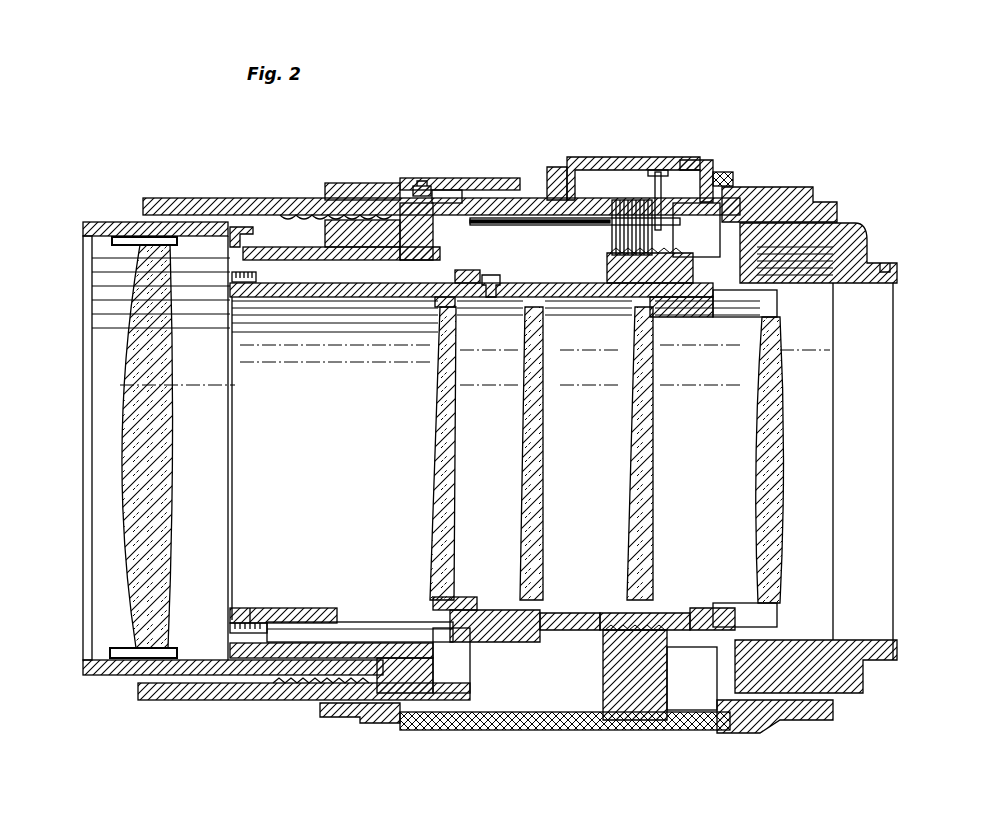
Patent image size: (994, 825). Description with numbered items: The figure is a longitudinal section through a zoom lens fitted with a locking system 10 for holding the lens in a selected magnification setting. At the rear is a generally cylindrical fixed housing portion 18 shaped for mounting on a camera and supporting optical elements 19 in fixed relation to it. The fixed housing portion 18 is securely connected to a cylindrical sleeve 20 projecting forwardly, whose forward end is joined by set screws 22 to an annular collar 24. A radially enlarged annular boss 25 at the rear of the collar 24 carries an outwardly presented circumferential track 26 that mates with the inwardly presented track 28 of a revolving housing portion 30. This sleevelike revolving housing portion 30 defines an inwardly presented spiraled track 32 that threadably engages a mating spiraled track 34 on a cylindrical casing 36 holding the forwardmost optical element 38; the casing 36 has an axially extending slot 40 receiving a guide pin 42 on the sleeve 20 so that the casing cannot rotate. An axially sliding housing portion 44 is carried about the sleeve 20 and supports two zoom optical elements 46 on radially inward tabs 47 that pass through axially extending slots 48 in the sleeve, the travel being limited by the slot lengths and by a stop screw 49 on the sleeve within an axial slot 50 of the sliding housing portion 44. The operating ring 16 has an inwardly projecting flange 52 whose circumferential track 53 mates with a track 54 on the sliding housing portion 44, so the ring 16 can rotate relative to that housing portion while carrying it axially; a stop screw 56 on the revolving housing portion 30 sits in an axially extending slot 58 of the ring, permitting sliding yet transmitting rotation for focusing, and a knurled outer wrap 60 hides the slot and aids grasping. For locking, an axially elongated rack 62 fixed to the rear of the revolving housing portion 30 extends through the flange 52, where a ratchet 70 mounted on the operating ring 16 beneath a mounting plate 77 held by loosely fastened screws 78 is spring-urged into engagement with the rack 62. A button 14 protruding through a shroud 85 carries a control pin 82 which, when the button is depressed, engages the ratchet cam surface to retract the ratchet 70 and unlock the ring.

The locking system 10 is at (532, 158).
The button 14 is at (705, 162).
The operating ring 16 is at (338, 185).
The fixed housing portion 18 is at (858, 232).
The optical elements 19 is at (652, 470).
The cylindrical sleeve 20 is at (342, 297).
The set screws 22 is at (232, 277).
The annular collar 24 is at (312, 260).
The annular boss 25 is at (430, 240).
The circumferential track 26 is at (405, 660).
The track 28 is at (410, 723).
The revolving housing portion 30 is at (185, 700).
The spiraled track 32 is at (300, 690).
The spiraled track 34 is at (325, 610).
The cylindrical casing 36 is at (130, 668).
The forwardmost optical element 38 is at (172, 508).
The slot 40 is at (238, 227).
The guide pin 42 is at (250, 227).
The axially sliding housing portion 44 is at (605, 297).
The zoom optical elements 46 is at (452, 488).
The tabs 47 is at (470, 307).
The slots 48 is at (345, 622).
The stop screw 49 is at (500, 276).
The axial slot 50 is at (480, 272).
The flange 52 is at (675, 265).
The circumferential track 53 is at (625, 665).
The track 54 is at (660, 615).
The stop screw 56 is at (445, 190).
The slot 58 is at (416, 186).
The outer wrap 60 is at (415, 180).
The rack 62 is at (565, 226).
The ratchet 70 is at (676, 238).
The mounting plate 77 is at (612, 200).
The screws 78 is at (585, 170).
The control pin 82 is at (658, 172).
The shroud 85 is at (733, 178).